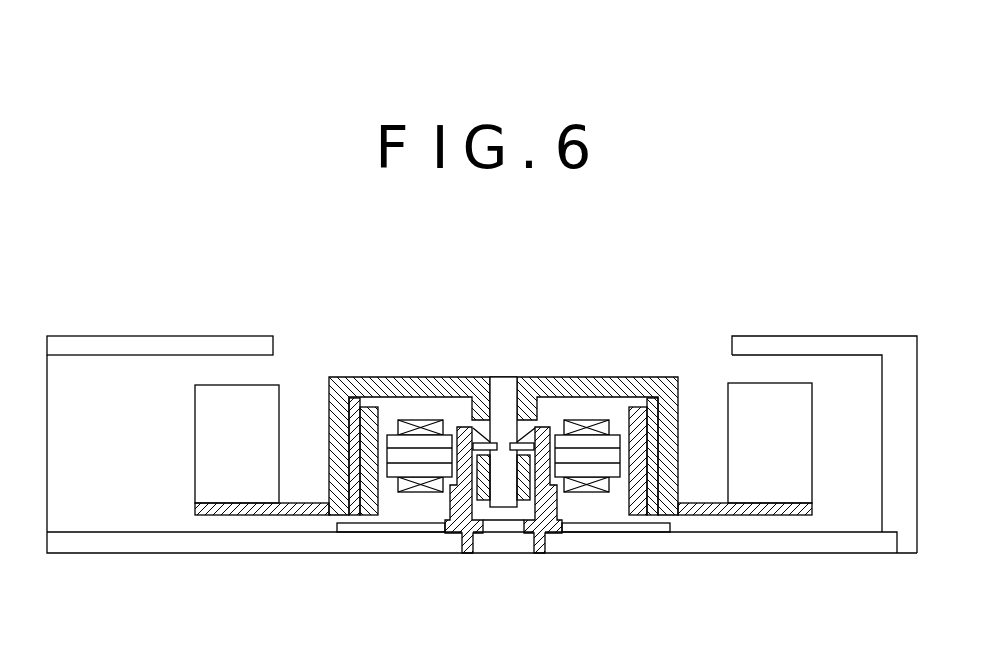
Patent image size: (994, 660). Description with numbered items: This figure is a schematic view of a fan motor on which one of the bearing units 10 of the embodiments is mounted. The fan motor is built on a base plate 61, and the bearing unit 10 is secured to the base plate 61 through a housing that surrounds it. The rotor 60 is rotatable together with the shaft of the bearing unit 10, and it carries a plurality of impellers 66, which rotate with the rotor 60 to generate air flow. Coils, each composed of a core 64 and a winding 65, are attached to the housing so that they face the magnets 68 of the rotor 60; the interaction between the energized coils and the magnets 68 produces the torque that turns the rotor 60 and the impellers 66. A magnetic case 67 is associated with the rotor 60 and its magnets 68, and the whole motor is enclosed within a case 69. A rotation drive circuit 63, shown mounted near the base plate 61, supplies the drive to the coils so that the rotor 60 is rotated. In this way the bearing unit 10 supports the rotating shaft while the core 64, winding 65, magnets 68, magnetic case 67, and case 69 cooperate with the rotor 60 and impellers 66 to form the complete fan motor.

The bearing unit 10 is at (457, 412).
The rotor 60 is at (397, 388).
The base plate 61 is at (196, 540).
The rotation drive circuit 63 is at (612, 528).
The core 64 is at (600, 442).
The winding 65 is at (571, 415).
The impeller 66 is at (226, 398).
The magnetic case 67 is at (353, 410).
The magnet 68 is at (638, 408).
The case 69 is at (838, 342).